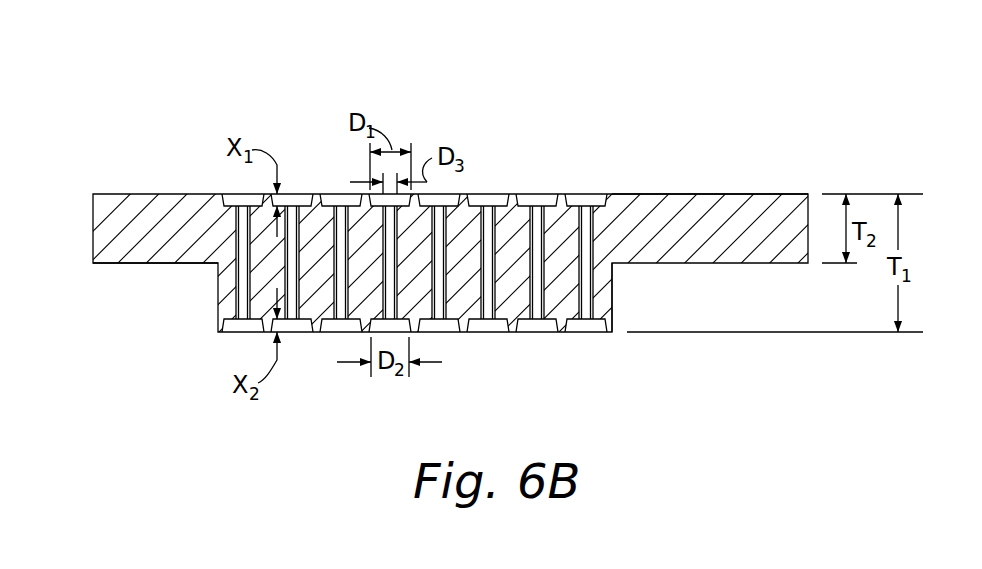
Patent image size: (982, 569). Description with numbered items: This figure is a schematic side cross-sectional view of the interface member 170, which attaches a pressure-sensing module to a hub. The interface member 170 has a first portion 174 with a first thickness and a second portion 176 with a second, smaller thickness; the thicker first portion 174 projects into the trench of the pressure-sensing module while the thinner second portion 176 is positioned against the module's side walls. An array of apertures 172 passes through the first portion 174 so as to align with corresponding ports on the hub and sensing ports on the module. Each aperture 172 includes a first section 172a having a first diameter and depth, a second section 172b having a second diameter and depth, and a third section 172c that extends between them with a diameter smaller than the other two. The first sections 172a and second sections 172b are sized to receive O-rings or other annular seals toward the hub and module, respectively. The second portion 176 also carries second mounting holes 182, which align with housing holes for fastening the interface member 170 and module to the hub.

The interface member 170 is at (712, 90).
The apertures 172 is at (338, 277).
The first section 172a is at (364, 198).
The second section 172b is at (400, 325).
The third section 172c is at (393, 247).
The first portion 174 is at (612, 300).
The second portion 176 is at (697, 207).
The second mounting holes 182 is at (133, 265).